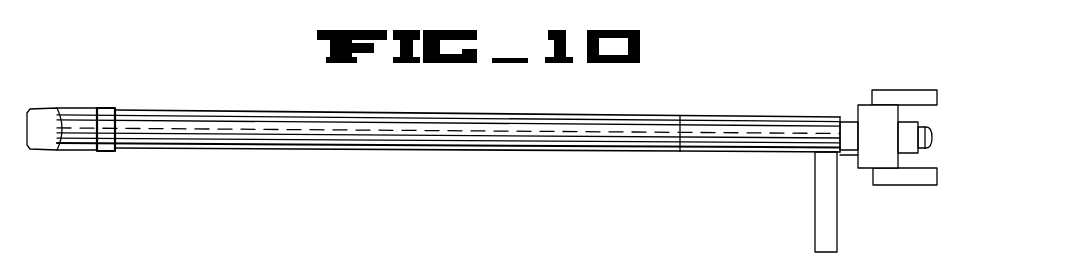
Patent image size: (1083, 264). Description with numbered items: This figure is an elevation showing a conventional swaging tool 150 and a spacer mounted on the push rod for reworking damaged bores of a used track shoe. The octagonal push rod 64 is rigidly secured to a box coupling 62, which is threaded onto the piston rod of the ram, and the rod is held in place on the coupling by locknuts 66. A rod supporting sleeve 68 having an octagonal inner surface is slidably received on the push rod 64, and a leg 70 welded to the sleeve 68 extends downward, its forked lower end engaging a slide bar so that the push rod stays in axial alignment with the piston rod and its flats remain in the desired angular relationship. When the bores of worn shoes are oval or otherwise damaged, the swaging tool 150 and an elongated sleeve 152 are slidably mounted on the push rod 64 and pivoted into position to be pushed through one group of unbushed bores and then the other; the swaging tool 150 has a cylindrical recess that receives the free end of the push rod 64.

The swaging tool 150 is at (78, 108).
The elongated sleeve 152 is at (313, 113).
The rod supporting sleeve 68 is at (777, 127).
The box coupling 62 is at (888, 98).
The locknuts 66 is at (906, 170).
The octagonal push rod 64 is at (932, 150).
The leg 70 is at (822, 220).